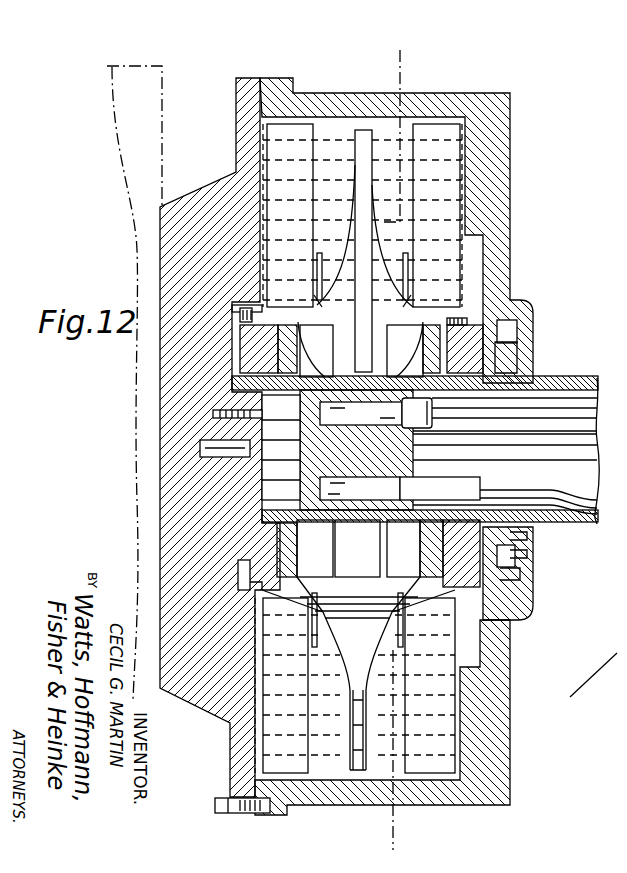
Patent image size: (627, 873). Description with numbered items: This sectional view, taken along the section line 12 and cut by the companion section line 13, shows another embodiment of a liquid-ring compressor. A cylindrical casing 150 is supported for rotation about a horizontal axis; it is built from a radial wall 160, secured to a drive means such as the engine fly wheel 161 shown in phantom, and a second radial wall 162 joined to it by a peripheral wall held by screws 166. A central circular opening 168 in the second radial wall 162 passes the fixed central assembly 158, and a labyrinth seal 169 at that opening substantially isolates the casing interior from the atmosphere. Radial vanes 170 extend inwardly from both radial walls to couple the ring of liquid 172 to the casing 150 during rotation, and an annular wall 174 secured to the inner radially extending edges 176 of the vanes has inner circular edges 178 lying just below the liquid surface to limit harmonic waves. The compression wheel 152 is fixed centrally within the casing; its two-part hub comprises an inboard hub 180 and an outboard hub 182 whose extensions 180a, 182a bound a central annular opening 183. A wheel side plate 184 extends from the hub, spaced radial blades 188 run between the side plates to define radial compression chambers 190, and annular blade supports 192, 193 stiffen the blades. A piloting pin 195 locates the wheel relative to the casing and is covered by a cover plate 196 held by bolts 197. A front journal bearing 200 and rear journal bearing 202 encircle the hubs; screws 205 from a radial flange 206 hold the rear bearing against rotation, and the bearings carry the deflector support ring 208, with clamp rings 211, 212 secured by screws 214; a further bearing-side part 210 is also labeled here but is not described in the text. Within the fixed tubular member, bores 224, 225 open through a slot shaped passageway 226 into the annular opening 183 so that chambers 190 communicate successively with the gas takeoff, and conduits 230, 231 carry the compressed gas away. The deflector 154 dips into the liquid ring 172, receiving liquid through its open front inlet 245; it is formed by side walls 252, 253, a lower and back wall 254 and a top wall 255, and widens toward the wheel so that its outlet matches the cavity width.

The section line 12— 12 is at (585, 682).
The section line 13— 13 is at (402, 62).
The cylindrical casing 150 is at (515, 108).
The compression wheel 152 is at (278, 547).
The deflector 154 is at (342, 745).
The fixed central assembly 158 is at (576, 529).
The radial wall 160 is at (237, 97).
The fly wheel 161 is at (170, 71).
The second radial wall 162 is at (512, 132).
The screws 166 is at (222, 813).
The central circular opening 168 is at (525, 386).
The labyrinth seal 169 is at (522, 571).
The radial vanes 170 is at (299, 171).
The ring of liquid 172 is at (354, 691).
The annular wall 174 is at (318, 256).
The inner radially extending edges 176 is at (412, 160).
The inner circular edges 178 is at (320, 298).
The inboard hub 180 is at (240, 392).
The extension of inboard hub 180a is at (302, 320).
The outboard hub 182 is at (527, 545).
The extension of outboard hub 182a is at (416, 323).
The central annular opening 183 is at (325, 365).
The wheel side plate 184 is at (268, 350).
The radial blades 188 is at (275, 615).
The radial compression chambers 190 is at (366, 543).
The annular blade support 192 is at (336, 570).
The annular blade support 193 is at (384, 575).
The piloting pin 195 is at (202, 448).
The cover plate 196 is at (260, 480).
The bolts 197 is at (215, 414).
The front journal bearing 200 is at (245, 356).
The rear journal bearing 202 is at (420, 360).
The screws 205 is at (512, 378).
The radial flange 206 is at (520, 363).
The deflector support ring 208 is at (465, 623).
The bearing cap 210 is at (520, 607).
The clamp ring 211 is at (245, 572).
The clamp ring 212 is at (522, 306).
The screws 214 is at (245, 316).
The bore 224 is at (380, 496).
The bore 225 is at (377, 421).
The slot shaped passageway 226 is at (383, 508).
The conduit 230 is at (570, 478).
The conduit 231 is at (432, 417).
The open front inlet 245 is at (626, 638).
The side wall 252 is at (352, 700).
The side wall 253 is at (365, 714).
The lower and back wall 254 is at (353, 772).
The top wall 255 is at (372, 572).